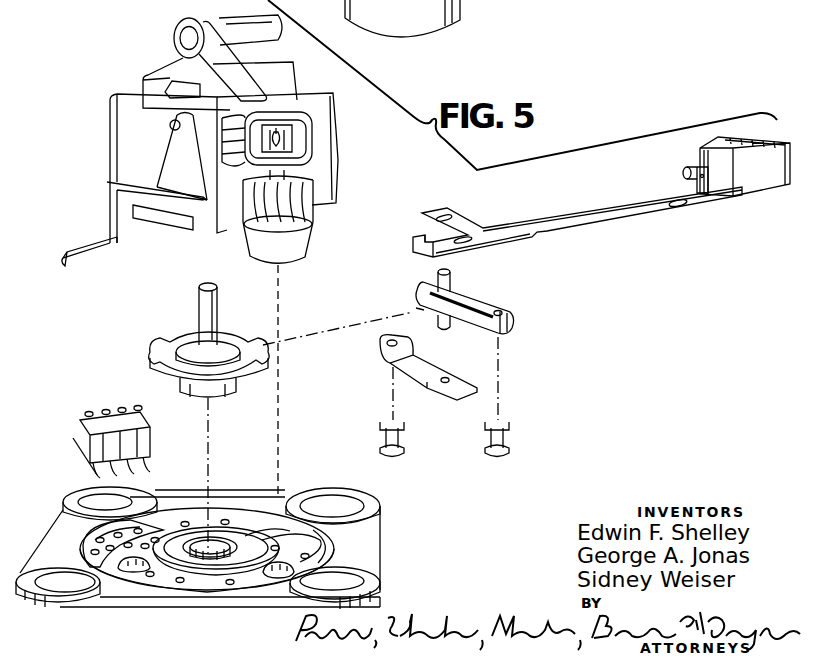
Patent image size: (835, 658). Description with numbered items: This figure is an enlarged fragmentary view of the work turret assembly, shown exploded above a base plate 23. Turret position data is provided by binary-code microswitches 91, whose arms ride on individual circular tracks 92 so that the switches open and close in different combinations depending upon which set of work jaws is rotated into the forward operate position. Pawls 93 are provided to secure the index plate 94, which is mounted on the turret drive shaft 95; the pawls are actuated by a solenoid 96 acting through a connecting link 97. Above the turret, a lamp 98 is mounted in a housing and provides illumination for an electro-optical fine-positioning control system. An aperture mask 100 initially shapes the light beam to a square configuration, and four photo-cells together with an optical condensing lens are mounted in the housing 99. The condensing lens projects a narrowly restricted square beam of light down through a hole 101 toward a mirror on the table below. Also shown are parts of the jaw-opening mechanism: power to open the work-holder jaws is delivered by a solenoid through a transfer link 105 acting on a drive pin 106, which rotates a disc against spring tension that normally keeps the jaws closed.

The base plate 23 is at (380, 520).
The binary-code microswitches 91 is at (80, 426).
The circular tracks 92 is at (297, 552).
The pawls 93 is at (458, 340).
The index plate 94 is at (236, 340).
The turret drive shaft 95 is at (214, 300).
The solenoid 96 is at (750, 184).
The connecting link 97 is at (612, 214).
The lamp 98 is at (302, 130).
The housing 99 is at (312, 240).
The aperture mask 100 is at (310, 165).
The hole 101 is at (276, 572).
The transfer link 105 is at (110, 215).
The drive pin 106 is at (70, 262).